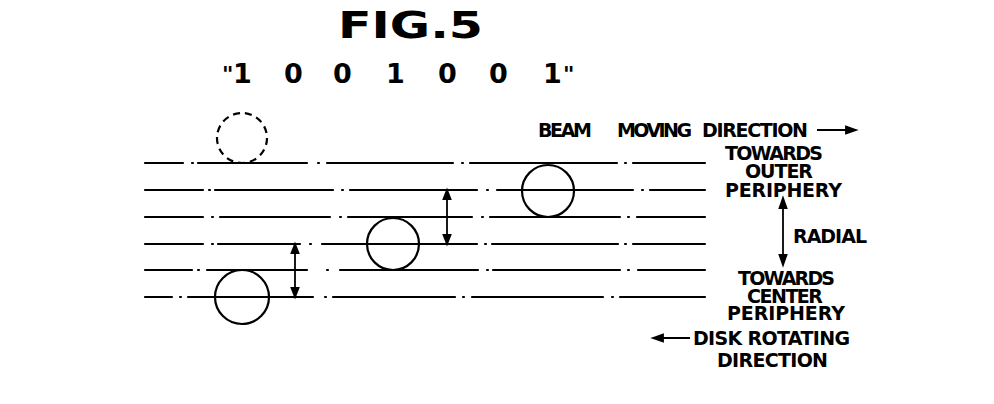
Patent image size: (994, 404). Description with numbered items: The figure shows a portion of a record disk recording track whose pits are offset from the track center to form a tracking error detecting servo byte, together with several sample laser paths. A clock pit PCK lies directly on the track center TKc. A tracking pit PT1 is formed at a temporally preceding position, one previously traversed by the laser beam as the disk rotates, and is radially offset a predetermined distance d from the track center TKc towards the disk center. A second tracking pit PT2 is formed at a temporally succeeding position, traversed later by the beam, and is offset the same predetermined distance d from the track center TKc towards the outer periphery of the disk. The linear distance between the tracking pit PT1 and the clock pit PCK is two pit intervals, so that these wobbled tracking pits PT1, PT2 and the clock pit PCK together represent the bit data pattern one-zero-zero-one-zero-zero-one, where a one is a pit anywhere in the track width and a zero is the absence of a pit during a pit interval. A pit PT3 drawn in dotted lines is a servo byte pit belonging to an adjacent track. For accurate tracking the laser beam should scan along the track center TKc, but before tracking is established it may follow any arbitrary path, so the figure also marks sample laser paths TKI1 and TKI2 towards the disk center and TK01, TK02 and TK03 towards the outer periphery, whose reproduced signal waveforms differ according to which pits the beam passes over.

The tracking pit PT1 is at (262, 316).
The tracking pit PT2 is at (562, 218).
The servo byte pit of an adjacent track PT3 is at (266, 144).
The clock pit PCK is at (382, 269).
The predetermined distance d is at (364, 243).
The sample laser path TK03 is at (388, 160).
The sample laser path TK02 is at (388, 188).
The sample laser path TK01 is at (388, 214).
The track center TKc is at (388, 240).
The sample laser path TKI2 is at (388, 267).
The sample laser path TKI1 is at (388, 293).